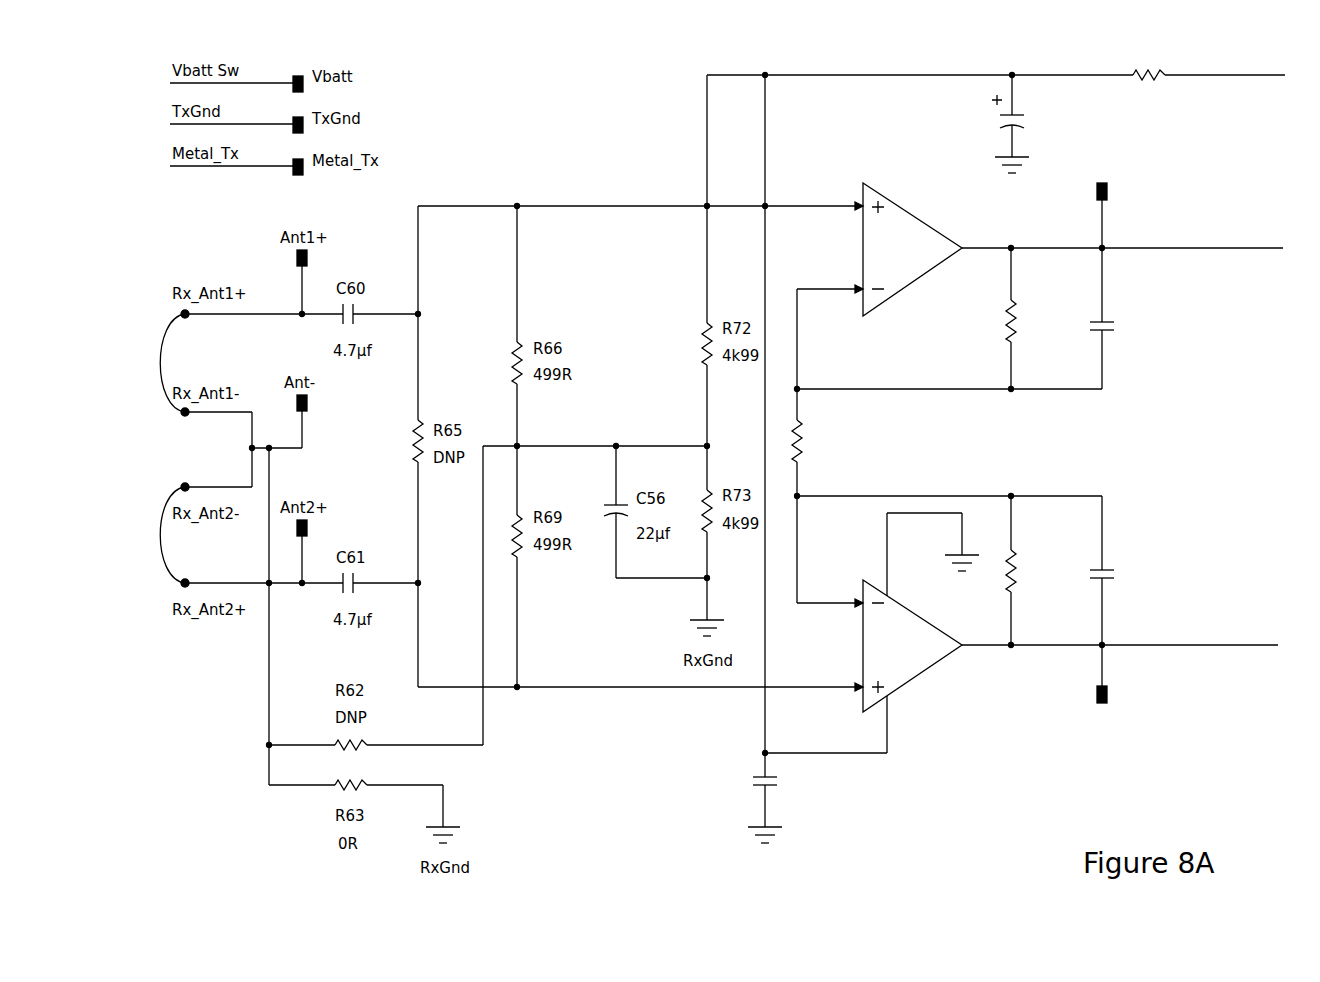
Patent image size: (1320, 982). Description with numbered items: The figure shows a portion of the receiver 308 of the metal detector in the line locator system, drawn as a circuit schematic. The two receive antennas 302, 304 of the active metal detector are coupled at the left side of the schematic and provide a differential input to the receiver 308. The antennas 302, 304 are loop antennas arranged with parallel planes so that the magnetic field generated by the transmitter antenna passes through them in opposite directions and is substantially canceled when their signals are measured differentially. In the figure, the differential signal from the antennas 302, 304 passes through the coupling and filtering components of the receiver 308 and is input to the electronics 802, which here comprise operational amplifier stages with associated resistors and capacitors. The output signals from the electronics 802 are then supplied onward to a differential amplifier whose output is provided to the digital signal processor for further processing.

The antenna 302 is at (160, 363).
The antenna 304 is at (160, 540).
The receiver electronics 308 is at (570, 160).
The electronics 802 is at (1185, 438).